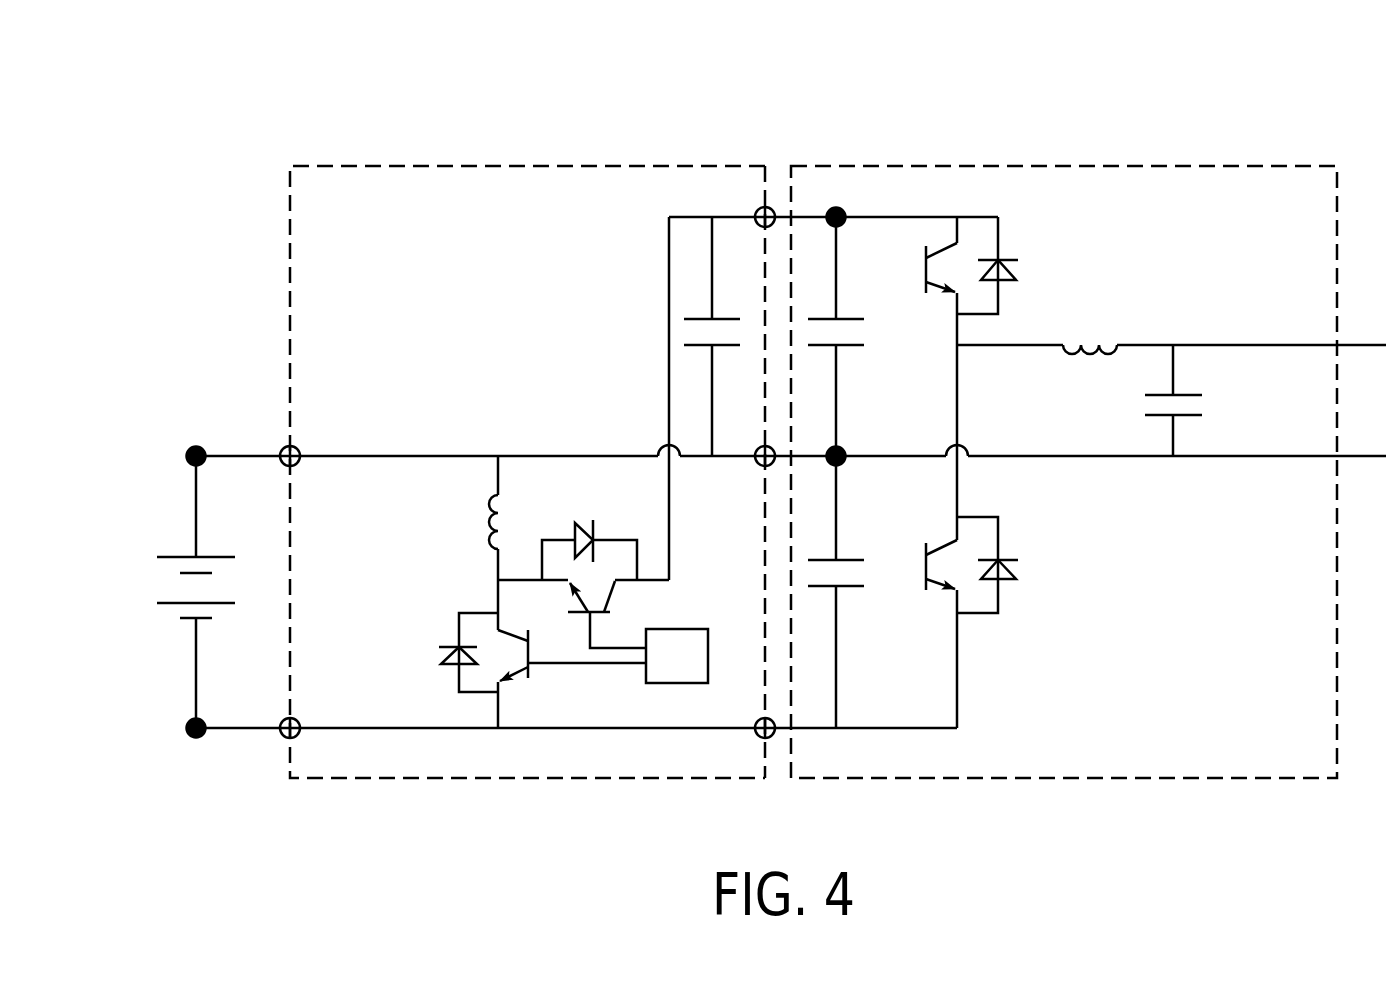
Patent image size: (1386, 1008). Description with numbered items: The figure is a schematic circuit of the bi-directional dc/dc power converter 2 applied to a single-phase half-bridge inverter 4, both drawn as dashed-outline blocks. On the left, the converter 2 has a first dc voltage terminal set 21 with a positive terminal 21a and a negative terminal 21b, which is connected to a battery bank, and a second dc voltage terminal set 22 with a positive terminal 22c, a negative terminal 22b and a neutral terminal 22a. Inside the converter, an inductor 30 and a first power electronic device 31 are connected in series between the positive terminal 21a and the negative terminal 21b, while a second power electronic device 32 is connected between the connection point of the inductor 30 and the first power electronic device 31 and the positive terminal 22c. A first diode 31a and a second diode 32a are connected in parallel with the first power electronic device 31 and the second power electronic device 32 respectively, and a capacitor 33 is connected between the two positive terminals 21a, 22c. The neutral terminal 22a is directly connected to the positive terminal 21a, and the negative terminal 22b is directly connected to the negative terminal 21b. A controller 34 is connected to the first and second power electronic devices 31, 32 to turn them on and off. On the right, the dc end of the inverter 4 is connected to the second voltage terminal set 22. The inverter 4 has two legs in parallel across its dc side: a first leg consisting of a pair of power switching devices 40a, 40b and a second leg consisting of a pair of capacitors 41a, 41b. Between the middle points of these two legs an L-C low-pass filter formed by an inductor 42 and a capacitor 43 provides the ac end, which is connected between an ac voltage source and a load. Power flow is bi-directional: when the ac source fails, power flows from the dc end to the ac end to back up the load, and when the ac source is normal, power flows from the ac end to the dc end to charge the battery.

The bi-directional dc/dc power converter 2 is at (519, 161).
The single-phase half-bridge inverter 4 is at (1164, 165).
The first dc voltage terminal set 21 is at (283, 394).
The positive terminal 21a is at (317, 471).
The negative terminal 21b is at (318, 740).
The second dc voltage terminal set 22 is at (769, 634).
The neutral terminal 22a is at (746, 471).
The negative terminal 22b is at (746, 743).
The positive terminal 22c is at (746, 234).
The inductor 30 is at (472, 543).
The first power electronic device 31 is at (572, 679).
The first diode 31a is at (445, 652).
The second power electronic device 32 is at (583, 614).
The second diode 32a is at (589, 534).
The capacitor 33 is at (709, 336).
The controller 34 is at (677, 672).
The power switching device 40a is at (989, 281).
The power switching device 40b is at (995, 536).
The capacitor 41a is at (851, 336).
The capacitor 41b is at (851, 592).
The inductor 42 is at (1171, 331).
The capacitor 43 is at (1193, 400).